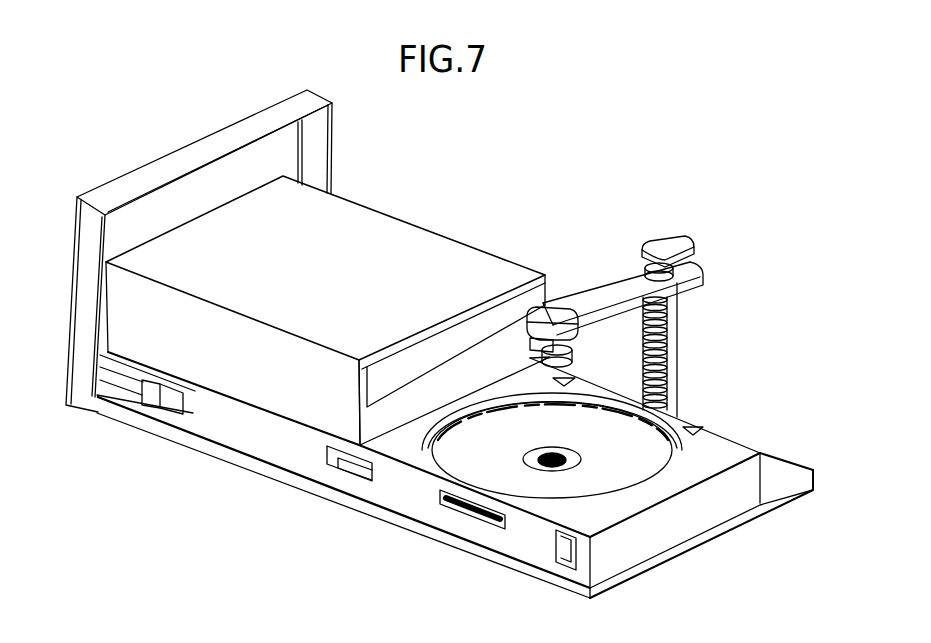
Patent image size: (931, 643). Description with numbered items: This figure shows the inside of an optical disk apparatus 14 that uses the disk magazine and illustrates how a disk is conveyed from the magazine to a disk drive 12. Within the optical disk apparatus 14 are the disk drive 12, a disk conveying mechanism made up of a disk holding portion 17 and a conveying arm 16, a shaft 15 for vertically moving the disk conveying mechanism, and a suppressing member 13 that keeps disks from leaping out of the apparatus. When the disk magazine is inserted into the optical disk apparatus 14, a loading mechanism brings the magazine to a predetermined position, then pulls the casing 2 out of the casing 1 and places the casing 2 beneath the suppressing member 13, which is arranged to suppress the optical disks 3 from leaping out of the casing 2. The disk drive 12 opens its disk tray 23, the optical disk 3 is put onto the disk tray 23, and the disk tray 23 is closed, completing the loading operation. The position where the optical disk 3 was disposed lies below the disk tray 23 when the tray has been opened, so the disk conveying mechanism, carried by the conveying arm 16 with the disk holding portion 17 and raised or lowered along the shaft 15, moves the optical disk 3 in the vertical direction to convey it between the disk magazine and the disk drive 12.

The casing 1 is at (267, 433).
The casing 2 is at (418, 490).
The optical disk 3 is at (540, 482).
The disk drive 12 is at (415, 248).
The suppressing member 13 is at (628, 502).
The optical disk apparatus 14 is at (117, 413).
The shaft 15 is at (673, 335).
The conveying arm 16 is at (608, 283).
The disk holding portion 17 is at (552, 325).
The disk tray 23 is at (360, 393).